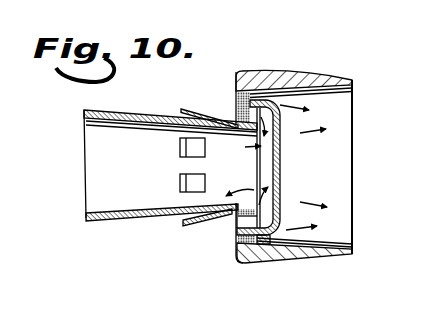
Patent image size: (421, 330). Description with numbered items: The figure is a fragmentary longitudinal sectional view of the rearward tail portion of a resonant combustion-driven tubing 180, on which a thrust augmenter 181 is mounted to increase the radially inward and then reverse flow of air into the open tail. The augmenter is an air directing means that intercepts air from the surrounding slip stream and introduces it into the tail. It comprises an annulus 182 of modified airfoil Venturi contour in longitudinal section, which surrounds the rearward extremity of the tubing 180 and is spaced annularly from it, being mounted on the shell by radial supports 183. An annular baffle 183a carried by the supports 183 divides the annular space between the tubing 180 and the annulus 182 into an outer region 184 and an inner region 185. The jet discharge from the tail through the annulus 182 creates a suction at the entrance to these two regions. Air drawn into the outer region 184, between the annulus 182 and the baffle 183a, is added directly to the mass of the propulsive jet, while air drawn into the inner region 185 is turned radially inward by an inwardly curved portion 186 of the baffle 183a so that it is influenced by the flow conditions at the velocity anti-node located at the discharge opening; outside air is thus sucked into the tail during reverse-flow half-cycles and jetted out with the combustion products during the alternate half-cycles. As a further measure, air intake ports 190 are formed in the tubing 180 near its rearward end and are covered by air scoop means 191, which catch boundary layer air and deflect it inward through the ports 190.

The resonant combustion-driven tubing 180 is at (155, 111).
The thrust augmenter 181 is at (322, 72).
The annulus 182 is at (267, 81).
The radial supports 183 is at (236, 94).
The annular baffle 183a is at (283, 123).
The outer region 184 is at (267, 241).
The inner region 185 is at (249, 211).
The inwardly curved portion 186 is at (282, 190).
The air intake ports 190 is at (185, 143).
The air scoop means 191 is at (183, 109).